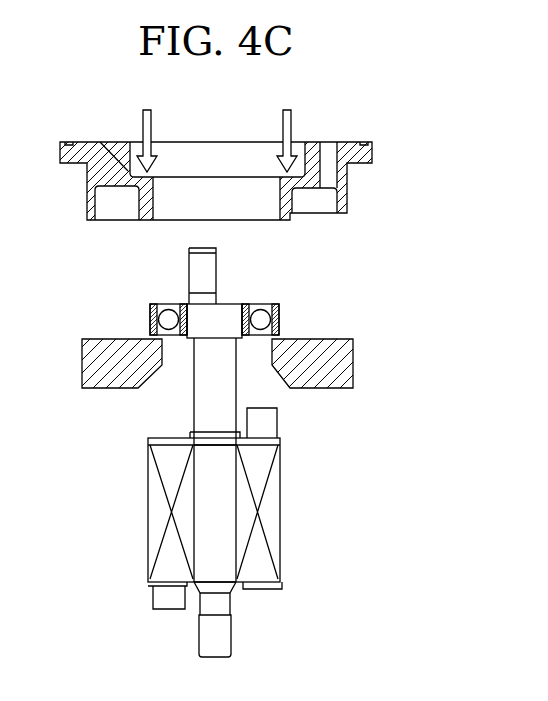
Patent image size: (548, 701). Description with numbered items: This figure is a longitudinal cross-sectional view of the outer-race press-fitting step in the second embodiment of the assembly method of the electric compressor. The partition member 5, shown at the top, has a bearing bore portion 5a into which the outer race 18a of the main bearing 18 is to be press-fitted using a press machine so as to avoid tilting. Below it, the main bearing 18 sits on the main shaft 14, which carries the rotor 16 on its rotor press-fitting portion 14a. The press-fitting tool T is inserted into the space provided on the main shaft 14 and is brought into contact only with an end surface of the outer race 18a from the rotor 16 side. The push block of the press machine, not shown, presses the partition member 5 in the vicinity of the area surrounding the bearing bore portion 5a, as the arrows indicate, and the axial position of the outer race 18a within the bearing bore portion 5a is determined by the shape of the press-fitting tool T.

The partition member 5 is at (84, 141).
The bearing bore portion 5a is at (153, 197).
The press-fitting tool T is at (100, 338).
The main shaft 14 is at (194, 406).
The rotor press-fitting portion 14a is at (218, 497).
The rotor 16 is at (147, 517).
The main bearing 18 is at (262, 303).
The outer race 18a is at (280, 319).